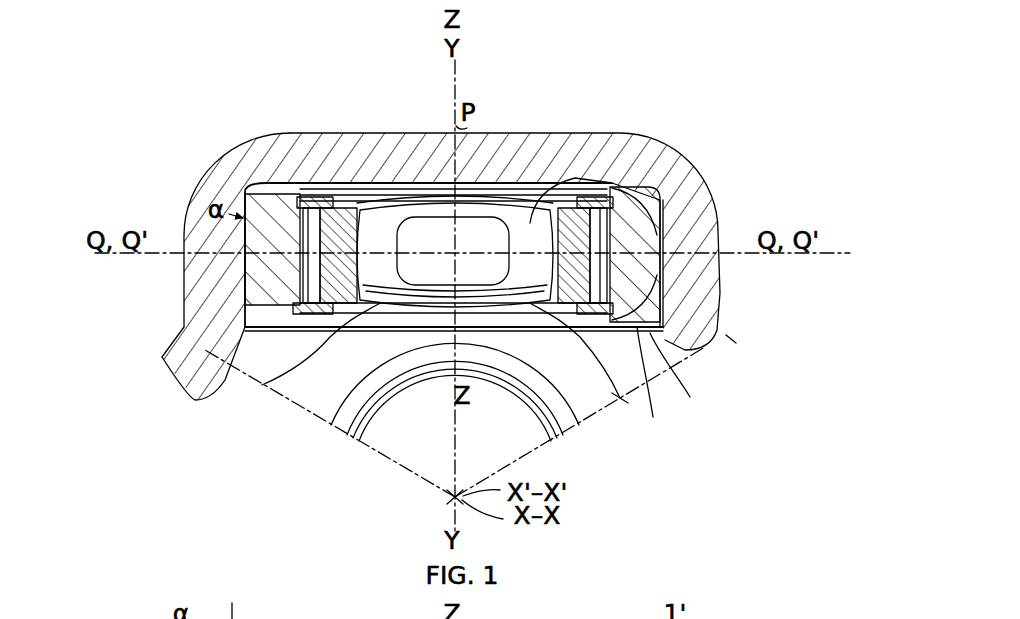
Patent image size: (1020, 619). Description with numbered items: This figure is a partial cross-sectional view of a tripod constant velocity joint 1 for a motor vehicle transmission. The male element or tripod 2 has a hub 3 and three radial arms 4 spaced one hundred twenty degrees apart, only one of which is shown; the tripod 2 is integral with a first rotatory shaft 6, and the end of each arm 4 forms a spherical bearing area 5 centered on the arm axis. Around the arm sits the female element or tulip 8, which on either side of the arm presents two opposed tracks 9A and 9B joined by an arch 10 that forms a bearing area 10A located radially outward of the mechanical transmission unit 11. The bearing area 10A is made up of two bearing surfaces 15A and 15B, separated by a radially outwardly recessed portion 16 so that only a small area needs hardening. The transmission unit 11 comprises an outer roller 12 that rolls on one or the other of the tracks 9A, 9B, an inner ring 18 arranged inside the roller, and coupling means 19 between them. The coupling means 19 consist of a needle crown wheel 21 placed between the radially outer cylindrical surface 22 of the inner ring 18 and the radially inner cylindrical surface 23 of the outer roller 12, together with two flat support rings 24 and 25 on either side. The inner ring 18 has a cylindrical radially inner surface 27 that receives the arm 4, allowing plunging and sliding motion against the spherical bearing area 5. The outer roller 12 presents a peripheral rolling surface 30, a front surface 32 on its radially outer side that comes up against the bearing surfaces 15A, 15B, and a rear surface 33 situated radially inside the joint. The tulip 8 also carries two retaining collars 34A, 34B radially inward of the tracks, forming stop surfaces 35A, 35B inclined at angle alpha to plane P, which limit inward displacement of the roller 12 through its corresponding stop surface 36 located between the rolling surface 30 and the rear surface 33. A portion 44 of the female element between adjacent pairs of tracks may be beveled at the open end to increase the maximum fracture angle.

The tripod constant velocity joint 1 is at (667, 118).
The male element or tripod 2 is at (593, 393).
The hub 3 is at (344, 340).
The radial arm 4 is at (565, 210).
The spherical bearing area 5 is at (490, 180).
The first rotatory shaft 6 is at (427, 447).
The female element or tulip 8 is at (218, 178).
The track 9A is at (243, 200).
The track 9B is at (652, 212).
The arch 10 is at (497, 186).
The bearing area 10A is at (310, 204).
The mechanical transmission unit 11 is at (622, 178).
The outer roller 12 is at (650, 327).
The bearing surface 15A is at (288, 190).
The bearing surface 15B is at (660, 222).
The radially outwardly recessed portion 16 is at (515, 196).
The inner ring 18 is at (345, 332).
The coupling means 19 is at (307, 322).
The needle crown wheel 21 is at (250, 357).
The radially outer cylindrical surface 22 is at (352, 212).
The radially inner cylindrical surface 23 is at (368, 208).
The flat support ring 24 is at (293, 337).
The flat support ring 25 is at (333, 198).
The radially inner surface 27 is at (412, 186).
The peripheral rolling surface 30 is at (668, 248).
The front surface 32 is at (650, 180).
The rear surface 33 is at (637, 327).
The retaining collar 34A is at (200, 327).
The retaining collar 34B is at (700, 353).
The stop surface 35A is at (245, 272).
The stop surface 35B is at (650, 312).
The stop surface 36 is at (683, 325).
The portion of the female element 44 is at (665, 344).